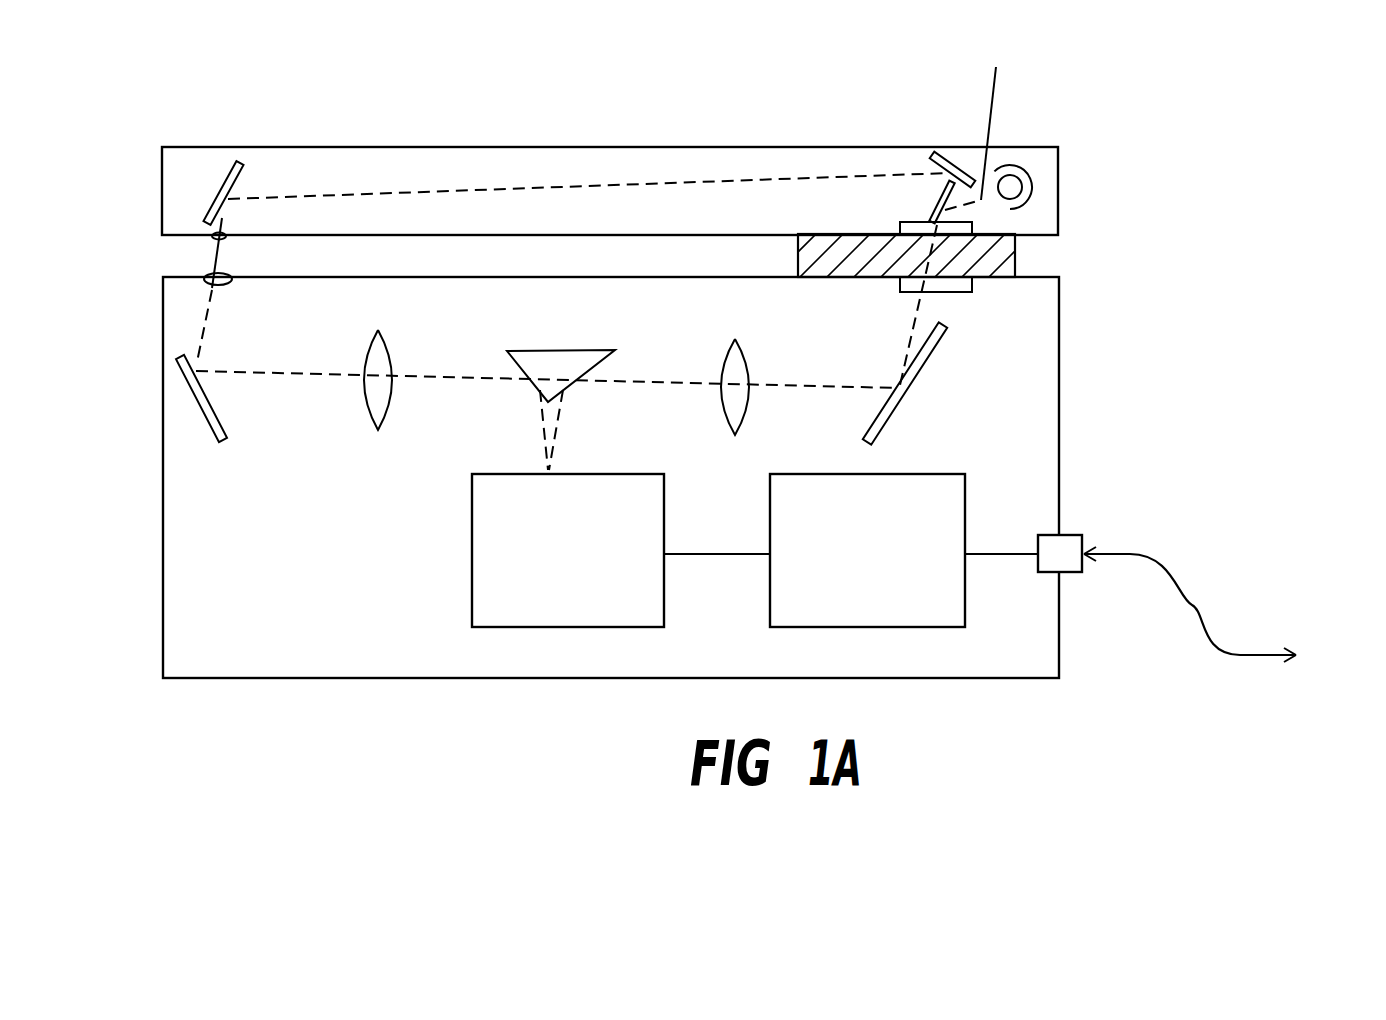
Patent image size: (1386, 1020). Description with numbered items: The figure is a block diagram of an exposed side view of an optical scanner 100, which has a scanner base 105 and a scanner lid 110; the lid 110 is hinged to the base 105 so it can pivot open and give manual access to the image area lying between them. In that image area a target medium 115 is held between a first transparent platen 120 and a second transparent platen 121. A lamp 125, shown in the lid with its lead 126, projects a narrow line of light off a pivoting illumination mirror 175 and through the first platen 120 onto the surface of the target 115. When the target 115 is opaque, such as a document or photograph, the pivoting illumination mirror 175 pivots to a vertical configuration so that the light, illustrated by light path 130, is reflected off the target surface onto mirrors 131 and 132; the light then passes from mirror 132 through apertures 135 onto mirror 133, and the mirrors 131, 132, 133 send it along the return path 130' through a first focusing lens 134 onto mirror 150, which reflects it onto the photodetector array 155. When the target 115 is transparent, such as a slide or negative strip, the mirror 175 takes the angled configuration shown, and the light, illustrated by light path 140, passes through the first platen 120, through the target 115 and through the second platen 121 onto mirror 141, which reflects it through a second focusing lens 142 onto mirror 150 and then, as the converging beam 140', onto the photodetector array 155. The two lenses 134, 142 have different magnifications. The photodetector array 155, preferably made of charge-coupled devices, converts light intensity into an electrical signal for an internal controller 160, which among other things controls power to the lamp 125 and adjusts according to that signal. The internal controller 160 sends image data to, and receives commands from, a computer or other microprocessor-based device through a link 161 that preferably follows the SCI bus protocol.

The scanner 100 is at (238, 642).
The scanner base 105 is at (163, 547).
The scanner lid 110 is at (343, 148).
The target medium 115 is at (1015, 257).
The first transparent platen 120 is at (900, 224).
The second transparent platen 121 is at (953, 292).
The lamp 125 is at (1017, 167).
The light source lead 126 is at (1008, 114).
The light path 130 is at (588, 144).
The return beam 130' is at (547, 412).
The mirror 131 is at (948, 158).
The mirror 132 is at (222, 163).
The mirror 133 is at (183, 379).
The first focusing lens 134 is at (385, 408).
The apertures 135 is at (205, 279).
The light path 140 is at (888, 305).
The diffracted beam 140' is at (605, 430).
The mirror 141 is at (933, 360).
The second focusing lens 142 is at (722, 362).
The mirror 150 is at (532, 350).
The photodetector array 155 is at (587, 536).
The internal controller 160 is at (895, 536).
The link 161 is at (1132, 552).
The pivoting illumination mirror 175 is at (945, 200).